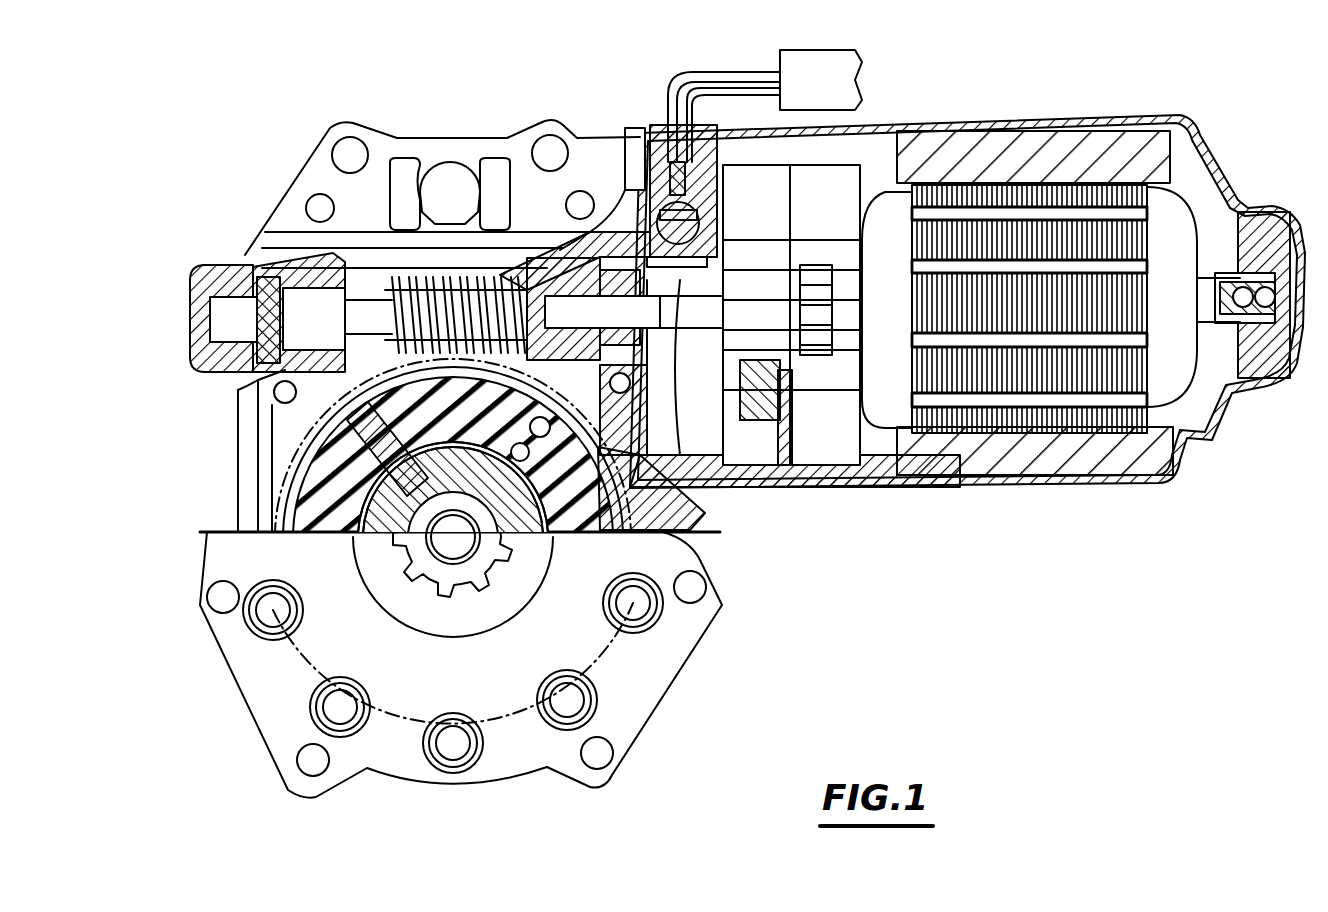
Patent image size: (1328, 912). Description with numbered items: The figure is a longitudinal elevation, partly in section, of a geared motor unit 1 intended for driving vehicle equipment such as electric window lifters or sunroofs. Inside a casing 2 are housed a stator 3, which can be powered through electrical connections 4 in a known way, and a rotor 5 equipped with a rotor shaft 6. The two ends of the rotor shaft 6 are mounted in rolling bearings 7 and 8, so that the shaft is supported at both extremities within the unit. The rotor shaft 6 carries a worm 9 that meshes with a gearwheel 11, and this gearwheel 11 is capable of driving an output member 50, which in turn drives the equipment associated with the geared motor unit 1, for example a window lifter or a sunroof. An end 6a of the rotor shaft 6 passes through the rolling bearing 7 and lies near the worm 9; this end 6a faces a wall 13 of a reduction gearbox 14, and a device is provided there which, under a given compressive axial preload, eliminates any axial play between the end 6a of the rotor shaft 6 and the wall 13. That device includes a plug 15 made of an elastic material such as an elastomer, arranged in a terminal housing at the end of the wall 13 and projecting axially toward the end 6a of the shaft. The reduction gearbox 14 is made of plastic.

The geared motor unit 1 is at (613, 92).
The casing 2 is at (1010, 124).
The stator 3 is at (942, 132).
The electrical connections 4 is at (702, 70).
The rotor 5 is at (1172, 224).
The rotor shaft 6 is at (700, 522).
The end of the rotor shaft 6a is at (272, 395).
The rolling bearing 7 is at (335, 254).
The rolling bearing 8 is at (1290, 210).
The worm 9 is at (472, 272).
The gearwheel 11 is at (300, 478).
The wall 13 is at (220, 262).
The reduction gearbox 14 is at (293, 187).
The plug 15 is at (190, 290).
The output member 50 is at (400, 603).